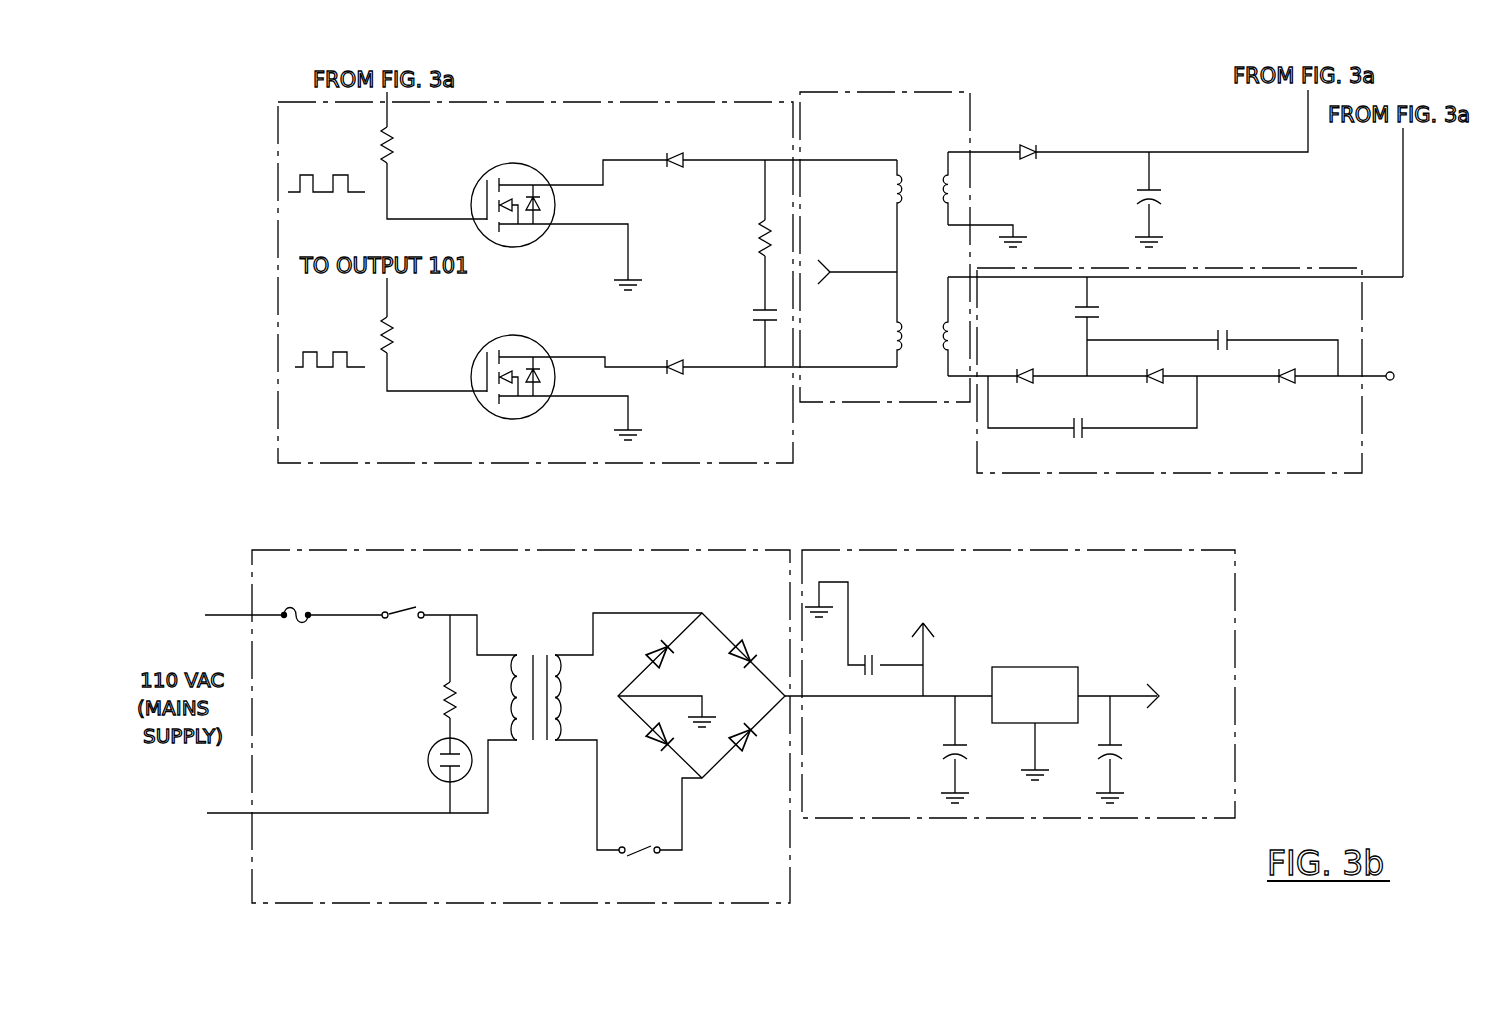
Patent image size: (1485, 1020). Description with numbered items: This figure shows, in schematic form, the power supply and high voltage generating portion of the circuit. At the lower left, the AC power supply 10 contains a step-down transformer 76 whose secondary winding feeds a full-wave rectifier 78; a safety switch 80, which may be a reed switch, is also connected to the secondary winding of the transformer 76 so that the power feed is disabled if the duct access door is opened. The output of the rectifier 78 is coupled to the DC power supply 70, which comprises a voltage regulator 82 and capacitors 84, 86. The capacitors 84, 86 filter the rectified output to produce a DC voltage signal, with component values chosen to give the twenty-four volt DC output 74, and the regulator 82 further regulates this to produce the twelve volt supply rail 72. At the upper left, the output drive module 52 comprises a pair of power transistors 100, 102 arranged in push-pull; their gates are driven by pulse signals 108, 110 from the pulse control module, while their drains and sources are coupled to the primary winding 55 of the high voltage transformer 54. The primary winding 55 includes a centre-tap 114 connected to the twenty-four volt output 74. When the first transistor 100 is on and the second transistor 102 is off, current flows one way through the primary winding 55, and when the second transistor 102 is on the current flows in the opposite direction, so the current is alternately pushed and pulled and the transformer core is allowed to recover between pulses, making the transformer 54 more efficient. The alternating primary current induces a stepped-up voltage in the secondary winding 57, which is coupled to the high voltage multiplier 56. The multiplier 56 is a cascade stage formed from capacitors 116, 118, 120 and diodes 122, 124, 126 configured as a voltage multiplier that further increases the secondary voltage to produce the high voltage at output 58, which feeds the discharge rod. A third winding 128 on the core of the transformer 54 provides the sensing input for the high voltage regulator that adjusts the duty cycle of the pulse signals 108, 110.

The AC power supply 10 is at (336, 550).
The output drive module 52 is at (735, 102).
The high voltage transformer 54 is at (970, 113).
The primary winding 55 is at (897, 158).
The high voltage multiplier 56 is at (1362, 445).
The secondary winding 57 is at (951, 335).
The output 58 is at (1396, 374).
The DC power supply 70 is at (1090, 550).
The +12 Volts supply rail 72 is at (1152, 686).
The 24 volt DC output 74 is at (930, 633).
The step-down transformer 76 is at (553, 652).
The full-wave rectifier 78 is at (722, 630).
The safety switch 80 is at (638, 853).
The voltage regulator 82 is at (1052, 667).
The capacitor 84 is at (950, 745).
The capacitor 86 is at (876, 655).
The power transistor 100 is at (498, 413).
The power transistor 102 is at (521, 247).
The pulse signal output 108 is at (331, 368).
The pulse signal 110 is at (340, 175).
The centre-tap 114 is at (832, 280).
The capacitor 116 is at (1095, 312).
The capacitor 118 is at (1085, 437).
The capacitor 120 is at (1228, 338).
The diode 122 is at (1025, 368).
The diode 124 is at (1153, 385).
The diode 126 is at (1290, 385).
The third winding 128 is at (998, 153).